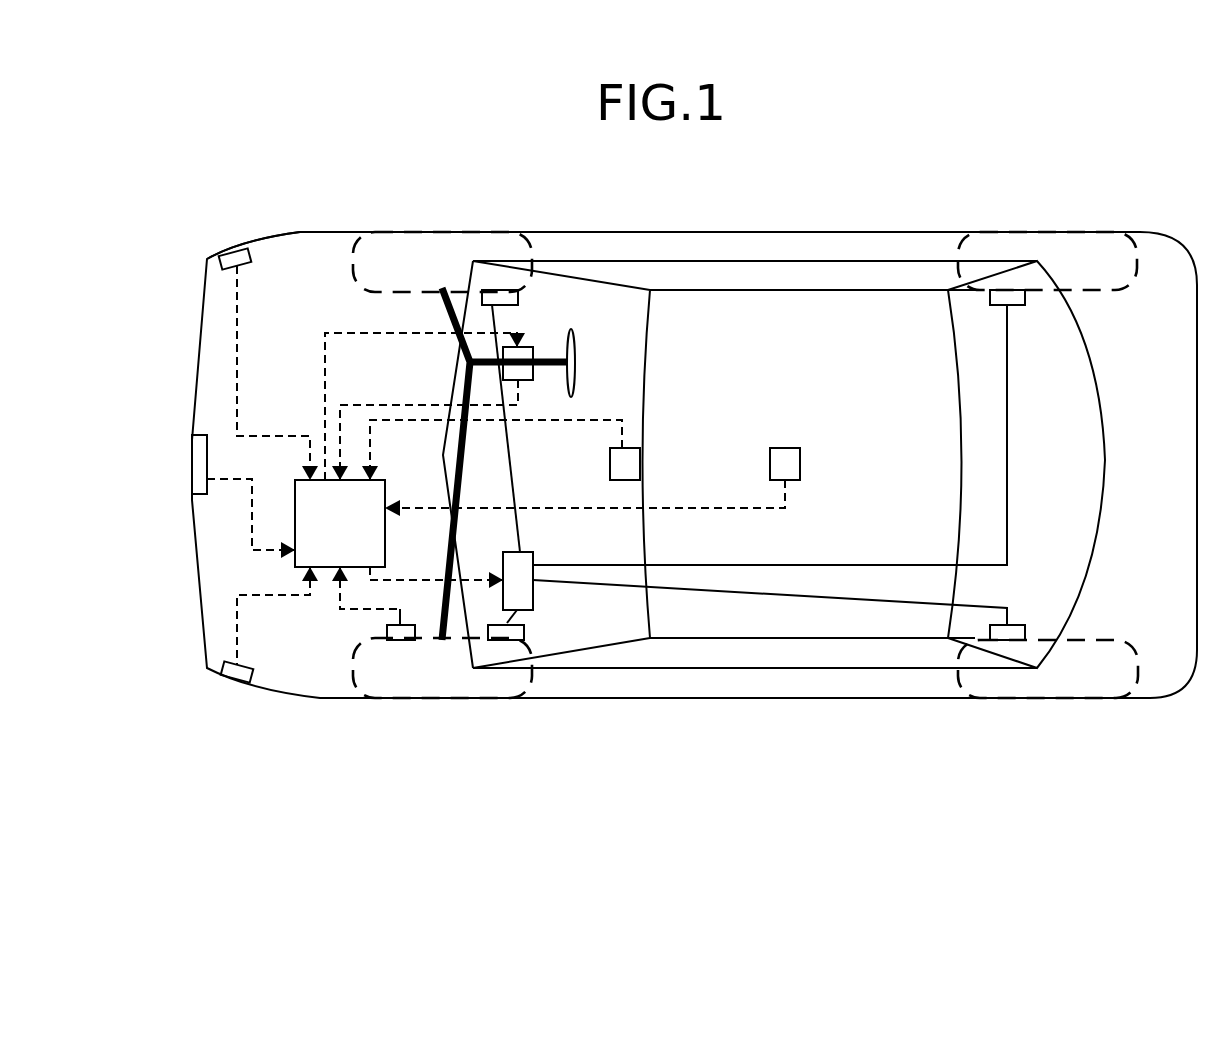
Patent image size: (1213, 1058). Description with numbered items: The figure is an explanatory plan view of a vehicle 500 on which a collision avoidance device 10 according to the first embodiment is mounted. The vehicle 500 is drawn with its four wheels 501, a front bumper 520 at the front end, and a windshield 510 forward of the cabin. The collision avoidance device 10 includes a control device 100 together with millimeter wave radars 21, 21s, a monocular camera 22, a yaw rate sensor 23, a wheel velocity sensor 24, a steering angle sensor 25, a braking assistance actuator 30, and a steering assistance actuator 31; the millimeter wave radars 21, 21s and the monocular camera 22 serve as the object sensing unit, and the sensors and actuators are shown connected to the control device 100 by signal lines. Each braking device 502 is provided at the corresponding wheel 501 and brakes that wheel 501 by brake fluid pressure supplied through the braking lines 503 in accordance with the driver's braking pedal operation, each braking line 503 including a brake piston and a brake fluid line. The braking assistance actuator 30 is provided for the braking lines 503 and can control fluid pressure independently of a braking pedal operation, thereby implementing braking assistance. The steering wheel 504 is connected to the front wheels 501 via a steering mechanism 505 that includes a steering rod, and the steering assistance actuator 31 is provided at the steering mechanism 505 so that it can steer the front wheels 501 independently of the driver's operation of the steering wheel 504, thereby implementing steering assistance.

The collision avoidance device 10 is at (180, 660).
The vehicle 500 is at (775, 210).
The front bumper 520 is at (196, 333).
The windshield 510 is at (622, 392).
The wheels 501 is at (443, 248).
The braking devices 502 is at (515, 285).
The braking lines 503 is at (518, 552).
The steering wheel 504 is at (572, 335).
The steering mechanism 505 is at (455, 363).
The steering assistance actuator 31 is at (527, 350).
The steering angle sensor 25 is at (532, 378).
The monocular camera 22 is at (505, 450).
The yaw rate sensor 23 is at (592, 482).
The control device 100 is at (403, 457).
The millimeter wave radar 21s is at (232, 250).
The millimeter wave radar 21 is at (192, 470).
The wheel velocity sensor 24 is at (393, 630).
The braking assistance actuator 30 is at (451, 581).